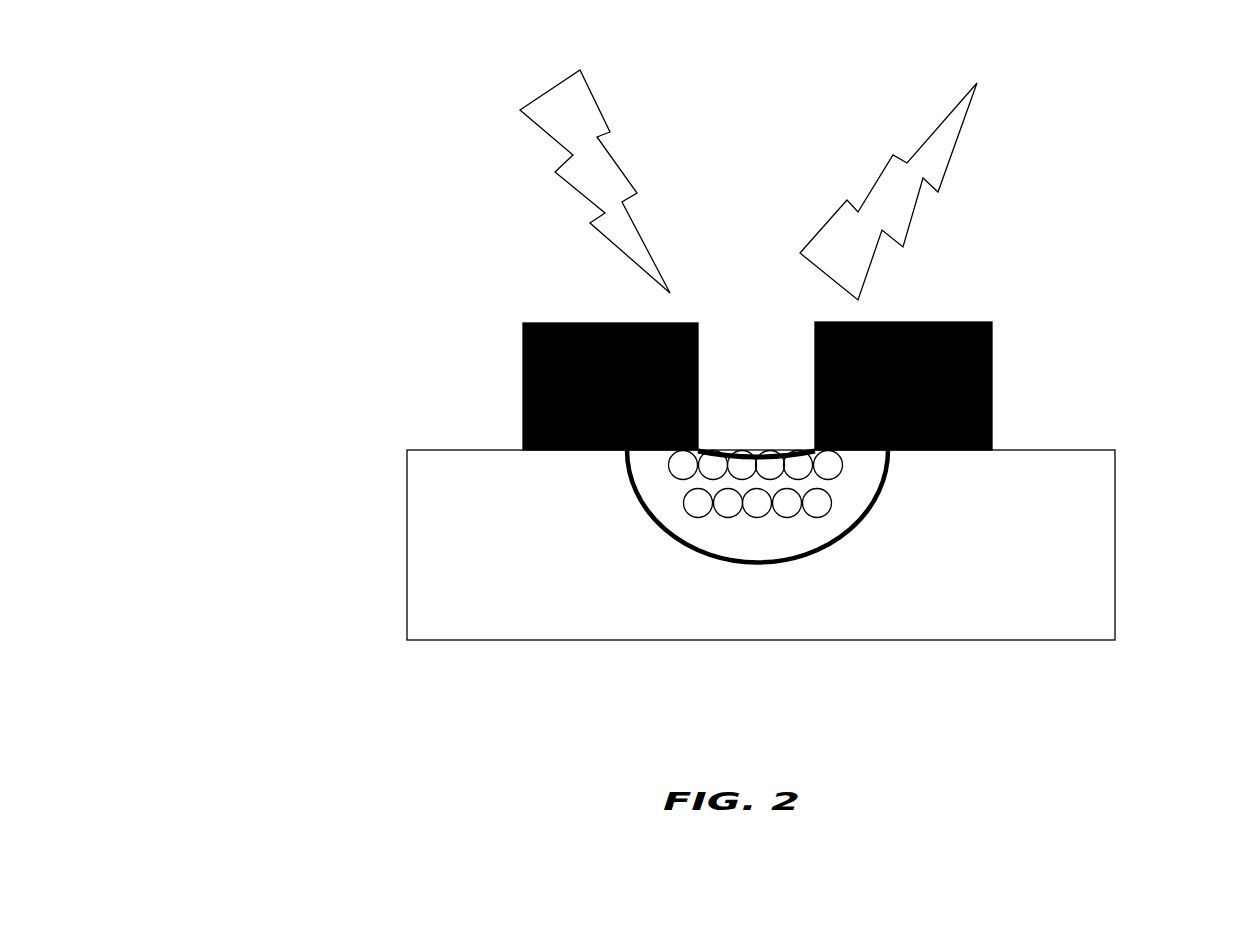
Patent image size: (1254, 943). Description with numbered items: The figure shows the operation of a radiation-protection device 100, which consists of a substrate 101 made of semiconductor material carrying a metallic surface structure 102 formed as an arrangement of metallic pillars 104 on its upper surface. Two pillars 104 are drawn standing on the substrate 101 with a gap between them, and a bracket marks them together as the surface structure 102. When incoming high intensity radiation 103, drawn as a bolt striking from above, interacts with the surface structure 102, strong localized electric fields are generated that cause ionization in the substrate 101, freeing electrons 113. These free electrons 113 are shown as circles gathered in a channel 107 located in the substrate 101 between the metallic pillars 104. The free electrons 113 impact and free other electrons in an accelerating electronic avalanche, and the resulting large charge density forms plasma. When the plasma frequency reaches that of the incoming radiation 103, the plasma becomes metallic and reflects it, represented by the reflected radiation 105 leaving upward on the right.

The radiation-protection device 100 is at (348, 367).
The substrate 101 is at (455, 525).
The metallic surface structure 102 is at (801, 369).
The incoming high intensity radiation 103 is at (558, 98).
The metallic pillars 104 is at (523, 335).
The reflected radiation 105 is at (945, 137).
The channel 107 is at (660, 498).
The free electrons 113 is at (813, 500).